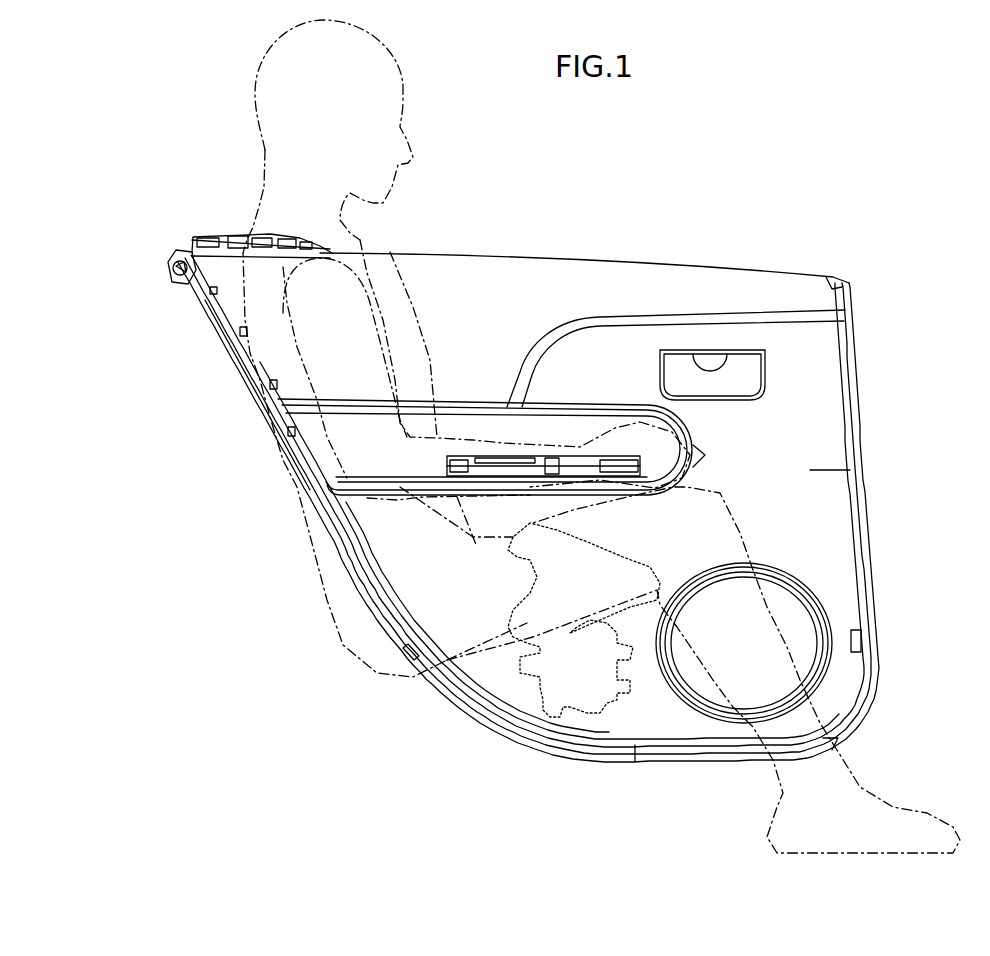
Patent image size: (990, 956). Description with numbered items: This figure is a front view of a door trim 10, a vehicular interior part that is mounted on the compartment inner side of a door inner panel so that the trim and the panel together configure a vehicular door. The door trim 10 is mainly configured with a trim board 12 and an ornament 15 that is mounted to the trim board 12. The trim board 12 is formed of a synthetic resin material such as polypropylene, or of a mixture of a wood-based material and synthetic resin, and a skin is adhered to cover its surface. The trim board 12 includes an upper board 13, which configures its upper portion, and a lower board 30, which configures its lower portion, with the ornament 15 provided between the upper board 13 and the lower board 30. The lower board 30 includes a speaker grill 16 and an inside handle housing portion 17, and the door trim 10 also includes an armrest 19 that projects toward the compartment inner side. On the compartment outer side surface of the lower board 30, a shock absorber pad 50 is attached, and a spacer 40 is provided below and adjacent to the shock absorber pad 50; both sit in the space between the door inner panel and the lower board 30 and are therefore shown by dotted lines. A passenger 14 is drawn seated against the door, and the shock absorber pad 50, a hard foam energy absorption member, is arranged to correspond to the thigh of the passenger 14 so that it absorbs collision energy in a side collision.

The door trim 10 is at (763, 243).
The trim board 12 is at (735, 351).
The upper board 13 is at (800, 290).
The lower board 30 is at (810, 460).
The passenger 14 is at (300, 158).
The ornament 15 is at (323, 437).
The speaker grill 16 is at (790, 615).
The inside handle housing portion 17 is at (703, 357).
The armrest 19 is at (490, 436).
The spacer 40 is at (590, 690).
The shock absorber pad 50 is at (450, 655).